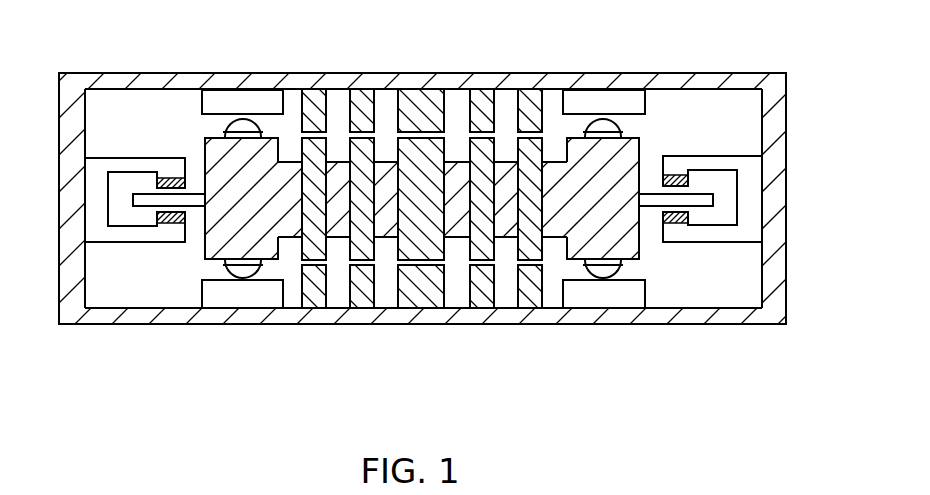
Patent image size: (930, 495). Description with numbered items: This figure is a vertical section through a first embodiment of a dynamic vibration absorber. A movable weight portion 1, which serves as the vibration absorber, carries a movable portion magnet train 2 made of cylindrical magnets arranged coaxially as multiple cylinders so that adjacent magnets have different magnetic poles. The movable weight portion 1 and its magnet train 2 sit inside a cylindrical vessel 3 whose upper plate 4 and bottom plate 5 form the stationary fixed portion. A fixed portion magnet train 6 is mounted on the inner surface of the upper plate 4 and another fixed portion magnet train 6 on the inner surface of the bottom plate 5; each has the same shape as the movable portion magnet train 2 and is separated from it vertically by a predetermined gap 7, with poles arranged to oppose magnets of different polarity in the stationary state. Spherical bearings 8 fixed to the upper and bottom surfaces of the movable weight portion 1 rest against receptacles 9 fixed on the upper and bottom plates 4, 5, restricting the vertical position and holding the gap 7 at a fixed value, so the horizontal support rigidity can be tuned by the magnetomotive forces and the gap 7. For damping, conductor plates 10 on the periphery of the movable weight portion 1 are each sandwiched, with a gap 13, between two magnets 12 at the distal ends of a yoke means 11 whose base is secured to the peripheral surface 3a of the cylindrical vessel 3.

The movable weight portion 1 is at (640, 152).
The movable portion magnet train 2 is at (452, 232).
The cylindrical vessel 3 is at (792, 138).
The peripheral surface 3a is at (784, 213).
The upper plate 4 is at (534, 88).
The bottom plate 5 is at (510, 322).
The fixed portion magnet train 6 is at (408, 95).
The gap 7 is at (430, 133).
The bearing 8 is at (600, 122).
The receptacle 9 is at (636, 93).
The conductor plate 10 is at (137, 186).
The yoke means 11 is at (121, 238).
The magnet 12 is at (170, 177).
The gap 13 is at (190, 208).